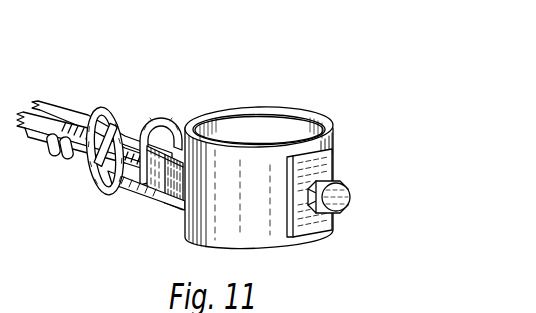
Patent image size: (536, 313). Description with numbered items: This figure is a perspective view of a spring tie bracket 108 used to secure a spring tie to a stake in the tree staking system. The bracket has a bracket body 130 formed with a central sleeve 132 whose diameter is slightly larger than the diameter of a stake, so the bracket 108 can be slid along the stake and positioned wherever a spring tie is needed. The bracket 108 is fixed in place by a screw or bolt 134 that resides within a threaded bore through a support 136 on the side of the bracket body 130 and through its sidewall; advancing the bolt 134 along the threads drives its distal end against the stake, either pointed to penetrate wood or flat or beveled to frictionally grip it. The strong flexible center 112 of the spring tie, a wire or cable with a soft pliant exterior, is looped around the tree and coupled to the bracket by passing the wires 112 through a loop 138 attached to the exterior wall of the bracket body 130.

The spring tie bracket 108 is at (199, 161).
The flexible center 112 is at (101, 155).
The bracket body 130 is at (272, 154).
The central sleeve 132 is at (251, 118).
The bolt 134 is at (340, 212).
The support 136 is at (306, 226).
The loop 138 is at (166, 204).